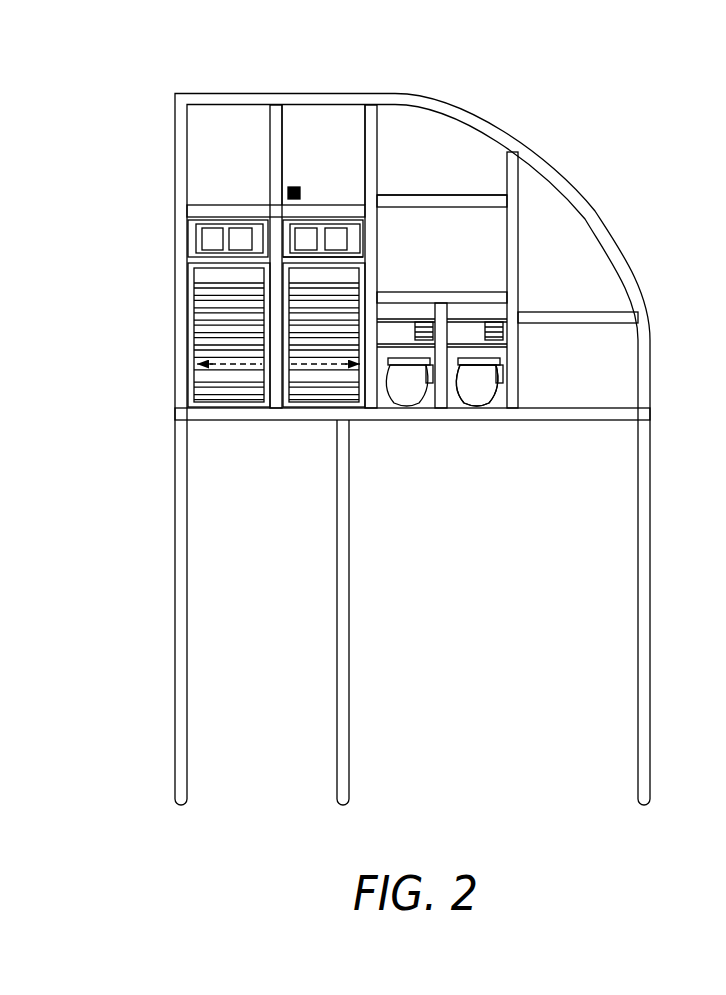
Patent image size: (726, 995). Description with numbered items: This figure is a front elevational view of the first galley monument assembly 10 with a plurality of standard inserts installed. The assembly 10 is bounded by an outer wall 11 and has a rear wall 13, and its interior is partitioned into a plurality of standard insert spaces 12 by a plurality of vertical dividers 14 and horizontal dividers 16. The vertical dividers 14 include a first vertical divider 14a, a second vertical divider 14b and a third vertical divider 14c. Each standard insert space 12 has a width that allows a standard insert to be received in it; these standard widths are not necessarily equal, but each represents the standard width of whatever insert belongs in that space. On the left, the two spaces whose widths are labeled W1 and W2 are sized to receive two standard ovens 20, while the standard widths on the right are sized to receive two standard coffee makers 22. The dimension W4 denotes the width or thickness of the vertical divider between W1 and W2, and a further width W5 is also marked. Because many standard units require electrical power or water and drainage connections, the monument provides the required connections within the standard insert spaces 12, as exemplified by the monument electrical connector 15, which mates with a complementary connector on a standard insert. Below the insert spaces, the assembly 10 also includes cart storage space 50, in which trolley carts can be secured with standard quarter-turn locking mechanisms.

The first galley monument assembly 10 is at (602, 106).
The outer wall 11 is at (176, 460).
The standard insert spaces 12 is at (213, 290).
The rear wall 13 is at (398, 127).
The vertical dividers 14 is at (243, 232).
The first vertical divider 14a is at (185, 354).
The second vertical divider 14b is at (278, 362).
The third vertical divider 14c is at (445, 242).
The monument electrical connector 15 is at (293, 187).
The horizontal dividers 16 is at (440, 196).
The standard ovens 20 is at (216, 383).
The standard coffee makers 22 is at (404, 398).
The cart storage space 50 is at (272, 605).
The standard width W1 is at (310, 240).
The standard width W2 is at (245, 275).
The width of the vertical divider W4 is at (318, 308).
The width W5 is at (313, 368).